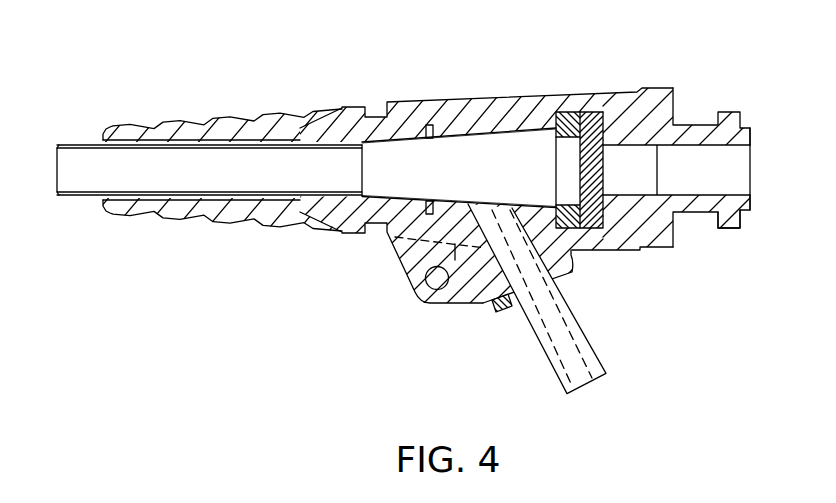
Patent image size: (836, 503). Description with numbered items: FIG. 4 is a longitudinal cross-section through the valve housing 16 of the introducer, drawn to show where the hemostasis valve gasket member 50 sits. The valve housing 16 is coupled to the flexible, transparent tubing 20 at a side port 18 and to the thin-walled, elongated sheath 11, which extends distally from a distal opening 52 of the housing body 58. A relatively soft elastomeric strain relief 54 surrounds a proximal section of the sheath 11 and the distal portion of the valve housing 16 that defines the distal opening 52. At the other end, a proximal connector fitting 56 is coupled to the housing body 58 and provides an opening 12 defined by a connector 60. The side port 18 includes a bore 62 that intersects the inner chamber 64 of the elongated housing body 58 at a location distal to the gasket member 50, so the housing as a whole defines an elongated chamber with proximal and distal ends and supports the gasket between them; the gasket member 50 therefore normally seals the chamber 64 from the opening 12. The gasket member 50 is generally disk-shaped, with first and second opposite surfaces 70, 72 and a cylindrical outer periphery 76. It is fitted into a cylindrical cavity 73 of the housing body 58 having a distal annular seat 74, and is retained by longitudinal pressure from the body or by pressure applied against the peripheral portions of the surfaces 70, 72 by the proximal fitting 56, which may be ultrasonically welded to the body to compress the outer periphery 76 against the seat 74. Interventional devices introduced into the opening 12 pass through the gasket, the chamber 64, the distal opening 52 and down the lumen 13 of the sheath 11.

The sheath 11 is at (77, 197).
The opening 12 is at (755, 162).
The lumen 13 is at (57, 168).
The valve housing 16 is at (486, 84).
The side port 18 is at (497, 313).
The tubing 20 is at (548, 364).
The hemostasis valve gasket member 50 is at (618, 226).
The distal opening 52 is at (141, 141).
The strain relief 54 is at (250, 224).
The proximal connector fitting 56 is at (690, 122).
The housing body 58 is at (395, 102).
The connector 60 is at (731, 231).
The bore 62 is at (488, 206).
The inner chamber 64 is at (414, 166).
The first surface 70 is at (603, 148).
The second surface 72 is at (573, 170).
The cylindrical cavity 73 is at (572, 112).
The distal annular seat 74 is at (566, 242).
The cylindrical outer periphery 76 is at (598, 112).